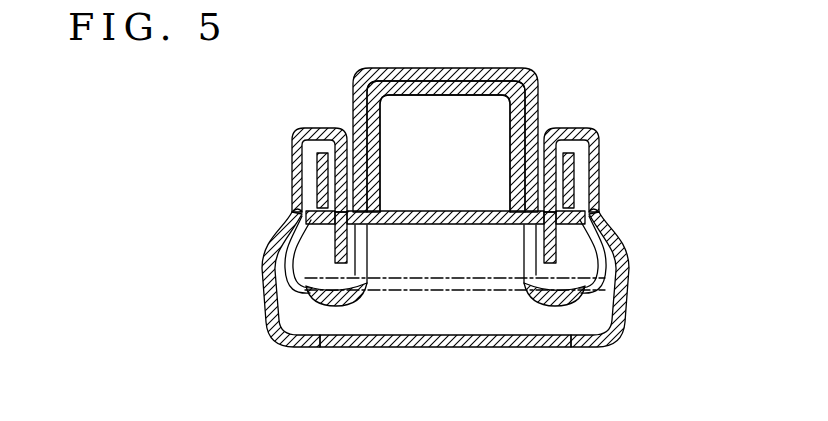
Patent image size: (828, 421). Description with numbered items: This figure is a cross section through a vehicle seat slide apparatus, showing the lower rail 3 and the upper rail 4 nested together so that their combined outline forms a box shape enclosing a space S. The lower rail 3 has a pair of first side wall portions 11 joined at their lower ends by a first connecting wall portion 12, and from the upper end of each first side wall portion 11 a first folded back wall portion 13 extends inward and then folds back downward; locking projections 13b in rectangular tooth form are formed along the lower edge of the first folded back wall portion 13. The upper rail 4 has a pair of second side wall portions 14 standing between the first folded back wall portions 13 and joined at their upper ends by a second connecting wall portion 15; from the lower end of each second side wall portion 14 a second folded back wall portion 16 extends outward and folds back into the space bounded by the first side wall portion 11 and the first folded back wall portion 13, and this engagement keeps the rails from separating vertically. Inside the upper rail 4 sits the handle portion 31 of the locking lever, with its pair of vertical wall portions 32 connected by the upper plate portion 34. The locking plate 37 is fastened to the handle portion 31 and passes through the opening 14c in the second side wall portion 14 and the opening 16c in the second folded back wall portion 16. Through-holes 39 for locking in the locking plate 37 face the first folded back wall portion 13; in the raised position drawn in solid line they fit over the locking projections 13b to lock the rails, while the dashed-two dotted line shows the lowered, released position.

The lower rail 3 is at (426, 303).
The upper rail 4 is at (447, 204).
The first side wall portion 11 is at (266, 268).
The first connecting wall portion 12 is at (433, 348).
The first folded back wall portion 13 is at (445, 201).
The locking projection 13b is at (348, 250).
The second side wall portion 14 is at (447, 229).
The opening extending through the second side wall portion 14c is at (368, 298).
The second connecting wall portion 15 is at (401, 68).
The second folded back wall portion 16 is at (303, 137).
The opening extending through the second folded back wall portion 16c is at (280, 309).
The handle portion 31 is at (445, 120).
The vertical wall portion 32 is at (508, 120).
The upper plate portion 34 is at (440, 80).
The locking plate 37 is at (440, 210).
The through-hole for locking 39 is at (302, 206).
The space S is at (508, 327).